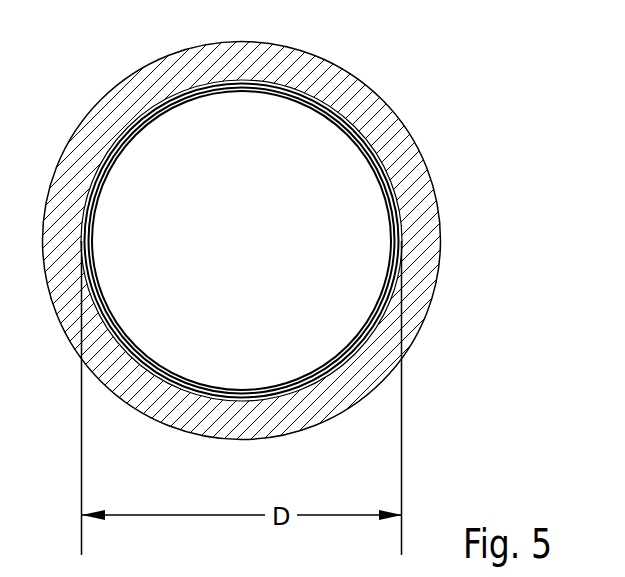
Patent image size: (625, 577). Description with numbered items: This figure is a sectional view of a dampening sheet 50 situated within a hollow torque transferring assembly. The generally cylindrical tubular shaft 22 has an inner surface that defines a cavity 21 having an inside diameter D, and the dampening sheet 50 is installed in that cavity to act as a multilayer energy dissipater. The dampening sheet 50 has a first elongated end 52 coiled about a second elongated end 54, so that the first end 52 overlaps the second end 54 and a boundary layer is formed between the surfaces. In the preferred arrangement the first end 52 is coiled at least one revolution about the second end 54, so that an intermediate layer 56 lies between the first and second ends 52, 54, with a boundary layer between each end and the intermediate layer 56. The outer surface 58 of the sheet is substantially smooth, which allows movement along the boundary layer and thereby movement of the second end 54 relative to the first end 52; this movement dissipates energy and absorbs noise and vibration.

The cavity 21 is at (297, 220).
The tubular shaft 22 is at (428, 217).
The dampening sheet 50 is at (313, 98).
The first elongated end 52 is at (203, 90).
The second elongated end 54 is at (265, 97).
The intermediate layer 56 is at (243, 90).
The outer surface 58 is at (145, 117).